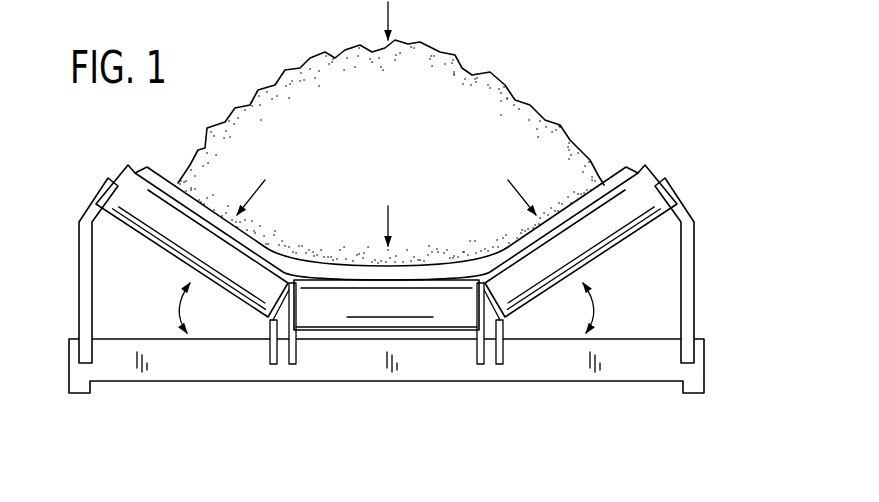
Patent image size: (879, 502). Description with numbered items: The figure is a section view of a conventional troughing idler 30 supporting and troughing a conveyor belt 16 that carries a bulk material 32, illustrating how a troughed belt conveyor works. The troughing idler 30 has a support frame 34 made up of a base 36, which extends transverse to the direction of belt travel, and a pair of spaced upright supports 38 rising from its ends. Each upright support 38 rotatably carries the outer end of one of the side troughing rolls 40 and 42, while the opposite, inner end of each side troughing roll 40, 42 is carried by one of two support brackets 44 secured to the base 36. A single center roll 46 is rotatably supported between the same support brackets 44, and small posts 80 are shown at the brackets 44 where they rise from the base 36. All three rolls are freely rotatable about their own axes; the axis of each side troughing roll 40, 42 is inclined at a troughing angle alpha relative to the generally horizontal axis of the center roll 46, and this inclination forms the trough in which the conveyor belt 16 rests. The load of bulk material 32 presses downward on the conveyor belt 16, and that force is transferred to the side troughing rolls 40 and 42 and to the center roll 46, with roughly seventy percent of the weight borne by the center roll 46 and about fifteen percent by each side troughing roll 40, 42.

The conveyor belt 16 is at (610, 177).
The troughing idler 30 is at (404, 282).
The bulk material 32 is at (447, 118).
The support frame 34 is at (404, 319).
The base 36 is at (591, 362).
The upright supports 38 is at (80, 268).
The side troughing roll 40 is at (633, 175).
The side troughing roll 42 is at (132, 193).
The support brackets 44 is at (273, 352).
The center roll 46 is at (328, 313).
The bracket post 80 is at (294, 358).